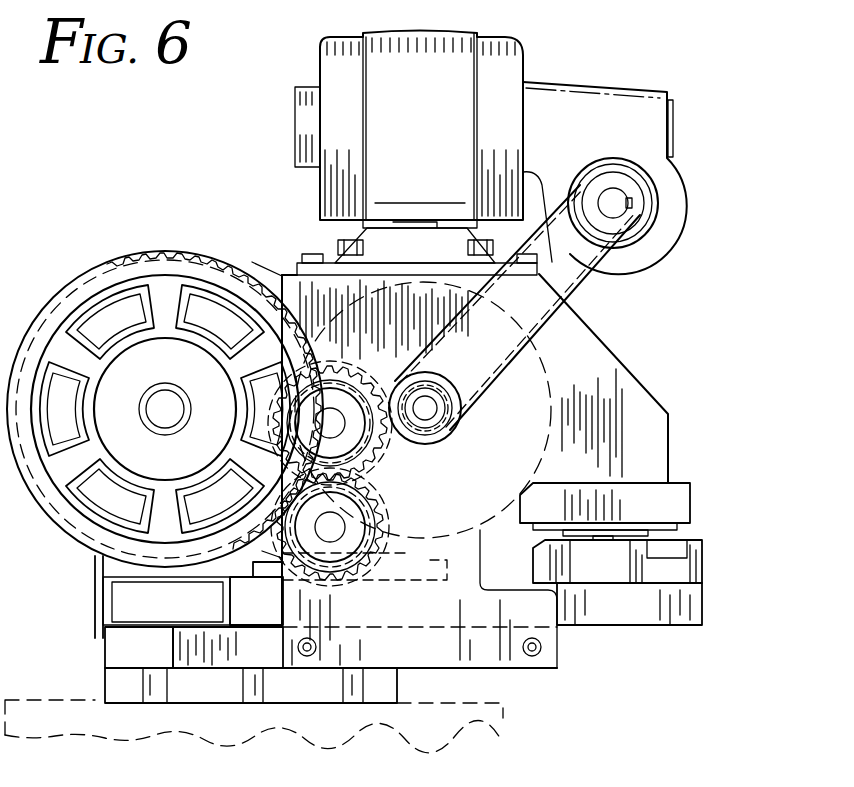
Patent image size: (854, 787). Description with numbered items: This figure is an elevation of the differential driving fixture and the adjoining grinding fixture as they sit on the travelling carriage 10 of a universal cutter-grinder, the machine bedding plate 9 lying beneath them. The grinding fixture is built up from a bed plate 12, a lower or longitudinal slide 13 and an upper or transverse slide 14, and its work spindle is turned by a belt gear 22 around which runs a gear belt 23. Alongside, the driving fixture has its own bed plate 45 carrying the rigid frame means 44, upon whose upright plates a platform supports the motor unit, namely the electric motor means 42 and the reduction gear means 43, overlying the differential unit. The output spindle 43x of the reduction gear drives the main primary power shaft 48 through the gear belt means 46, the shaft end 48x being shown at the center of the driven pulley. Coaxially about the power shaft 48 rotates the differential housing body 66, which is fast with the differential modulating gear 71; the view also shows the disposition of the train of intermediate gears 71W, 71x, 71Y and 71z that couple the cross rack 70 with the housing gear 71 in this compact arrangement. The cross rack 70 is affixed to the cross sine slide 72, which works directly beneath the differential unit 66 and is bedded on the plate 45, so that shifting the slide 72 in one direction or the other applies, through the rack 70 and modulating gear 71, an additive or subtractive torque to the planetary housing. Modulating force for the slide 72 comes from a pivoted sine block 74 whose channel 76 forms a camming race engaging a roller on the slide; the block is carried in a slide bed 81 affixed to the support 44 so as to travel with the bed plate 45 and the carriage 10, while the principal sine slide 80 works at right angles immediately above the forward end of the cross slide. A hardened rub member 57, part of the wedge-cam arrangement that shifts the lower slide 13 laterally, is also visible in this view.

The machine bedding plate 9 is at (125, 680).
The travelling carriage 10 is at (62, 728).
The bed plate 12 is at (130, 643).
The lower slide 13 is at (127, 600).
The upper slide 14 is at (127, 565).
The belt gear 22 is at (180, 366).
The gear belt 23 is at (255, 262).
The electric motor means 42 is at (432, 134).
The reduction gear means 43 is at (592, 138).
The output spindle of the reduction gear 43x is at (658, 212).
The rigid frame means 44 is at (588, 367).
The bed plate 45 is at (272, 663).
The gear belt means 46 is at (582, 289).
The main primary power shaft 48 is at (428, 412).
The pulley shaft 48x is at (443, 382).
The rub member 57 is at (340, 242).
The differential housing body 66 is at (597, 405).
The cross rack 70 is at (395, 565).
The differential modulating gear 71 is at (446, 433).
The intermediate gear 71z is at (329, 354).
The intermediate gear 71Y is at (367, 443).
The intermediate gear 71x is at (297, 477).
The intermediate gear 71W is at (360, 510).
The cross sine slide 72 is at (270, 617).
The sine block 74 is at (608, 572).
The channel 76 is at (666, 548).
The principal sine slide 80 is at (681, 531).
The slide bed 81 is at (674, 493).